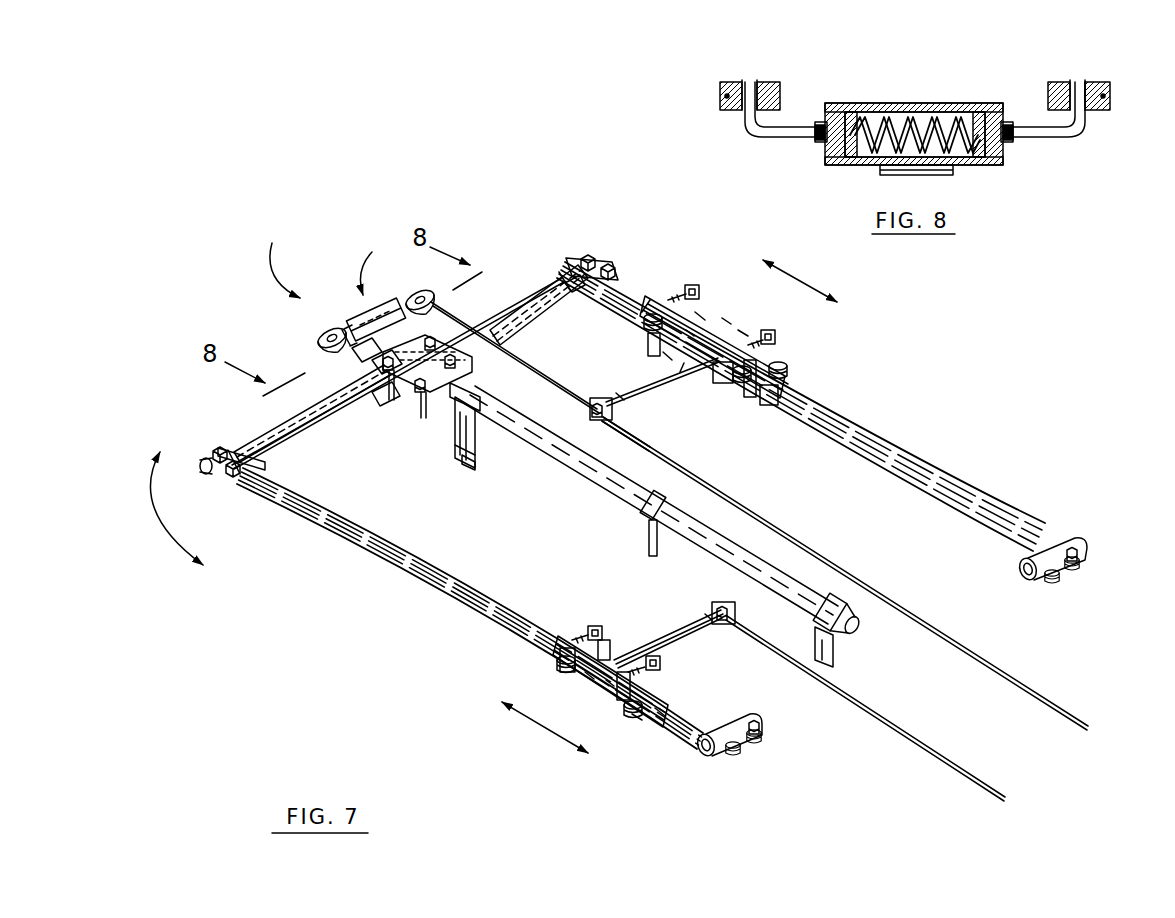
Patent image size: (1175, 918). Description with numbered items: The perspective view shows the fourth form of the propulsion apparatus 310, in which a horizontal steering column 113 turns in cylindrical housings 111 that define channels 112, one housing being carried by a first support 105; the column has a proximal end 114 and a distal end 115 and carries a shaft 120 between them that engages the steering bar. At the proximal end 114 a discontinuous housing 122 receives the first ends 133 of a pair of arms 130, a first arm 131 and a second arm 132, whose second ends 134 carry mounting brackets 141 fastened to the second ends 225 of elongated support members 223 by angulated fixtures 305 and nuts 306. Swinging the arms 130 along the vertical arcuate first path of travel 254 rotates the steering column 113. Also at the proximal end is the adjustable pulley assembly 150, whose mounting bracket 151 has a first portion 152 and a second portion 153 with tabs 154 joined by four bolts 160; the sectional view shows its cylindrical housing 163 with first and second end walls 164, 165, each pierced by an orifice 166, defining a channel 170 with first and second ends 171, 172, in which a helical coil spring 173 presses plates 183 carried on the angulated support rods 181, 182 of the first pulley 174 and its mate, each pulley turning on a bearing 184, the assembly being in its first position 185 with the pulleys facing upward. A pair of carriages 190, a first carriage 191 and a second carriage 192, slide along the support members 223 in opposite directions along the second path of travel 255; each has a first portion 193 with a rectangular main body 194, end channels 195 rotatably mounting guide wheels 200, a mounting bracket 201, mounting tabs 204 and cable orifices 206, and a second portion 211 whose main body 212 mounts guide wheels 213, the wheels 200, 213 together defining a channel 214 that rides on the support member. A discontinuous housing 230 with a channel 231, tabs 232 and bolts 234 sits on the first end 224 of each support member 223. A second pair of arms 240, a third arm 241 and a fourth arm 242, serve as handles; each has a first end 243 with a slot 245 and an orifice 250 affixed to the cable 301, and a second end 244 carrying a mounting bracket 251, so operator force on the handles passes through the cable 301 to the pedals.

In FIG. 7, the first support 105 is at (463, 453).
In FIG. 7, the housing 111 is at (479, 438).
In FIG. 7, the channel 112 is at (493, 404).
In FIG. 7, the steering column 113 is at (686, 526).
In FIG. 7, the proximal end 114 is at (456, 420).
In FIG. 7, the distal end 115 is at (853, 612).
In FIG. 7, the shaft 120 is at (648, 528).
In FIG. 7, the discontinuous housing 122 is at (374, 401).
In FIG. 7, the pair of arms 130 is at (395, 351).
In FIG. 7, the first arm 131 is at (497, 325).
In FIG. 7, the second arm 132 is at (292, 427).
In FIG. 7, the first end 133 is at (457, 343).
In FIG. 7, the second end 134 is at (267, 447).
In FIG. 7, the mounting bracket 141 is at (571, 291).
In FIG. 7, the adjustable pulley assembly 150 is at (373, 313).
In FIG. 7, the mounting bracket 151 is at (437, 402).
In FIG. 7, the first portion 152 is at (408, 408).
In FIG. 7, the second portion 153 is at (360, 418).
In FIG. 7, the tabs 154 is at (432, 421).
In FIG. 7, the bolts 160 is at (500, 345).
In FIG. 7, the housing 163 is at (371, 338).
In FIG. 8, the housing 163 is at (925, 119).
In FIG. 7, the first end wall 164 is at (397, 307).
In FIG. 8, the first end wall 164 is at (830, 112).
In FIG. 7, the second end wall 165 is at (363, 322).
In FIG. 7, the orifice 166 is at (357, 352).
In FIG. 8, the orifice 166 is at (817, 130).
In FIG. 8, the channel 170 is at (940, 115).
In FIG. 8, the first end 171 is at (848, 160).
In FIG. 8, the second end 172 is at (973, 163).
In FIG. 8, the helical coil spring 173 is at (912, 113).
In FIG. 8, the first pulley 174 is at (927, 77).
In FIG. 8, the support rod 181 is at (772, 137).
In FIG. 8, the support rod 182 is at (1073, 137).
In FIG. 8, the plate 183 is at (833, 163).
In FIG. 8, the bearing 184 is at (758, 83).
In FIG. 7, the first position 185 is at (376, 263).
In FIG. 8, the first position 185 is at (944, 117).
In FIG. 7, the carriages 190 is at (669, 507).
In FIG. 7, the first carriage 191 is at (700, 317).
In FIG. 7, the second carriage 192 is at (570, 677).
In FIG. 7, the first portion 193 is at (728, 397).
In FIG. 7, the main body 194 is at (648, 350).
In FIG. 7, the channels 195 is at (770, 397).
In FIG. 7, the guide wheels 200 is at (640, 327).
In FIG. 7, the mounting bracket 201 is at (690, 333).
In FIG. 7, the mounting tabs 204 is at (657, 300).
In FIG. 7, the orifices 206 is at (723, 374).
In FIG. 7, the second portion 211 is at (743, 333).
In FIG. 7, the main body 212 is at (727, 322).
In FIG. 7, the guide wheels 213 is at (637, 717).
In FIG. 7, the channel 214 is at (660, 713).
In FIG. 7, the support member 223 is at (387, 558).
In FIG. 7, the first end 224 is at (757, 740).
In FIG. 7, the second end 225 is at (573, 265).
In FIG. 7, the discontinuous housing 230 is at (907, 656).
In FIG. 7, the channel 231 is at (710, 750).
In FIG. 7, the tabs 232 is at (733, 760).
In FIG. 7, the bolts 234 is at (760, 718).
In FIG. 7, the second pair of arms 240 is at (635, 411).
In FIG. 7, the third arm 241 is at (643, 376).
In FIG. 7, the fourth arm 242 is at (697, 622).
In FIG. 7, the first end 243 is at (620, 397).
In FIG. 7, the second end 244 is at (683, 368).
In FIG. 7, the slot 245 is at (590, 409).
In FIG. 7, the orifice 250 is at (587, 403).
In FIG. 7, the mounting bracket 251 is at (667, 357).
In FIG. 7, the first path of travel 254 is at (152, 500).
In FIG. 7, the second path of travel 255 is at (797, 278).
In FIG. 7, the cable 301 is at (993, 655).
In FIG. 7, the angulated fixtures 305 is at (607, 270).
In FIG. 7, the nut 306 is at (202, 463).
In FIG. 7, the fourth form of the propulsion apparatus 310 is at (283, 260).